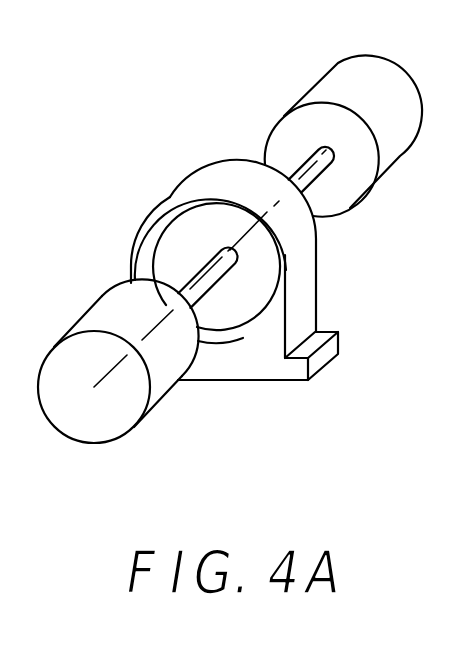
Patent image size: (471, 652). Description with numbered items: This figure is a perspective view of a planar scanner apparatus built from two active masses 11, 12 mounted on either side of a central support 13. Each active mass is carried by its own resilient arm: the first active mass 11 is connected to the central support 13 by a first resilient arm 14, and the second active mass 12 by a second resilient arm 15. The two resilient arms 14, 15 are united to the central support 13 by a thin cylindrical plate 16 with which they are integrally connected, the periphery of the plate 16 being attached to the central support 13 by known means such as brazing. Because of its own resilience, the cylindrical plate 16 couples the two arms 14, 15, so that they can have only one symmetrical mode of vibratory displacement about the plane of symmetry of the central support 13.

The active mass 11 is at (152, 388).
The active mass 12 is at (377, 150).
The central support 13 is at (270, 340).
The resilient arm 14 is at (196, 287).
The resilient arm 15 is at (312, 182).
The thin plate 16 is at (257, 272).